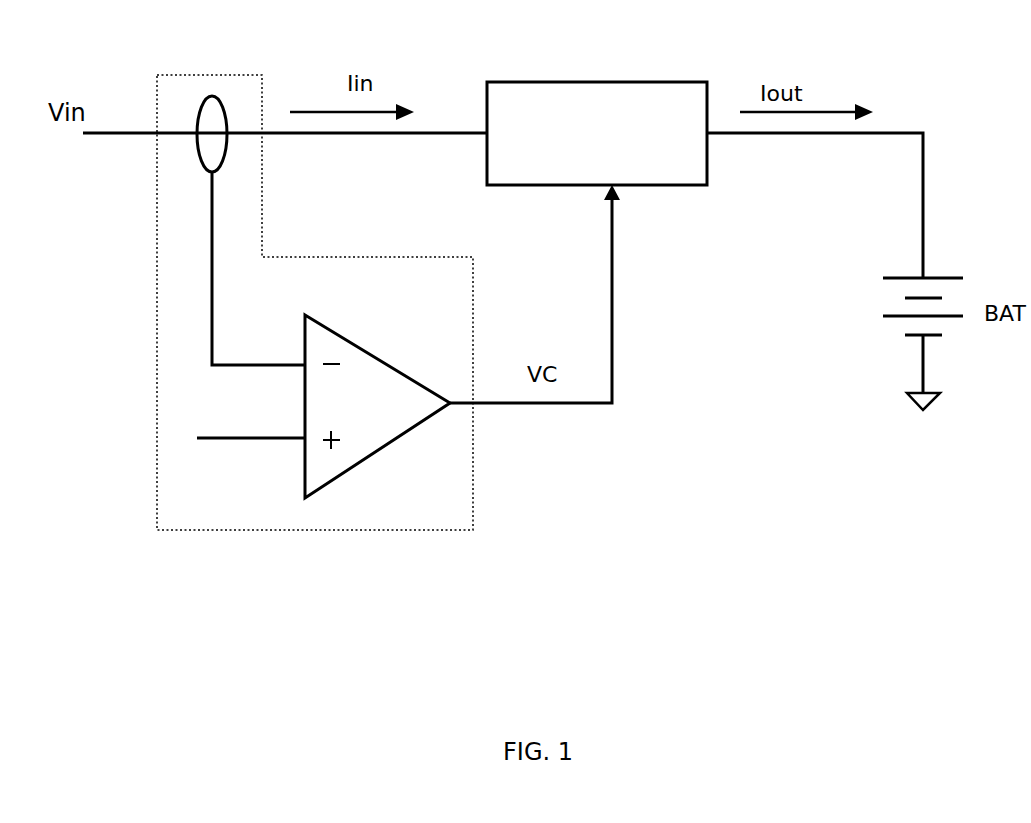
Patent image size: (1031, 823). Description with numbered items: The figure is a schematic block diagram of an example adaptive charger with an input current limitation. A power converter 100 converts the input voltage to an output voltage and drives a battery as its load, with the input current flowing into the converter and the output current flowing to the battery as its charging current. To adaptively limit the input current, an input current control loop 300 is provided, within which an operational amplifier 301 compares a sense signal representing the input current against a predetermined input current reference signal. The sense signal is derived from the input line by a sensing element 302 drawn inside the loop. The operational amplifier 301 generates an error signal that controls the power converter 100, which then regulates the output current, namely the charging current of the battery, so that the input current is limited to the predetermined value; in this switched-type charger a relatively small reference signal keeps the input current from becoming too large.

The power converter 100 is at (612, 82).
The input current control loop 300 is at (310, 257).
The operational amplifier 301 is at (393, 443).
The current sensor 302 is at (215, 97).